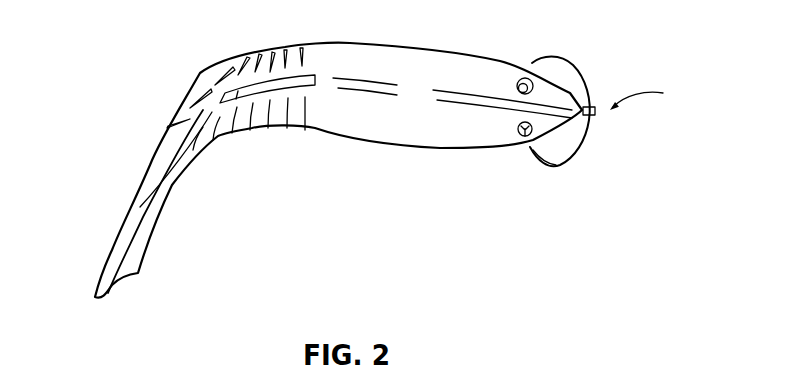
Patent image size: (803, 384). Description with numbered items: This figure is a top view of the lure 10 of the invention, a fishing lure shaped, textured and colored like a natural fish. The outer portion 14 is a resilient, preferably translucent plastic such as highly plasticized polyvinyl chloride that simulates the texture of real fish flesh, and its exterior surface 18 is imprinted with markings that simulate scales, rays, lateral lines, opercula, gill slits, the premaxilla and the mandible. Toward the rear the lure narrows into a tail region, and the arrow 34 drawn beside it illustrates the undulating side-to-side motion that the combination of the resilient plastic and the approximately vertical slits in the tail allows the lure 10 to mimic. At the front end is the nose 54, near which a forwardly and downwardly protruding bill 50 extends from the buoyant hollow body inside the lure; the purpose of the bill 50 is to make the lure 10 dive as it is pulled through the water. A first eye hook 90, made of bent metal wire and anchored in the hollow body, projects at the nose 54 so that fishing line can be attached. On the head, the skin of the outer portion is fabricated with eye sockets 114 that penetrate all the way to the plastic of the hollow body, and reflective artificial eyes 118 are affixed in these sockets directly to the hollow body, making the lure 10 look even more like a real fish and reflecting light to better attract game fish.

The lure 10 is at (366, 177).
The outer portion 14 is at (400, 57).
The exterior surface 18 is at (505, 62).
The arrow 34 is at (139, 110).
The bill 50 is at (567, 70).
The nose 54 is at (652, 96).
The first eye hook 90 is at (589, 107).
The eye sockets 114 is at (523, 78).
The reflective artificial eyes 118 is at (522, 137).